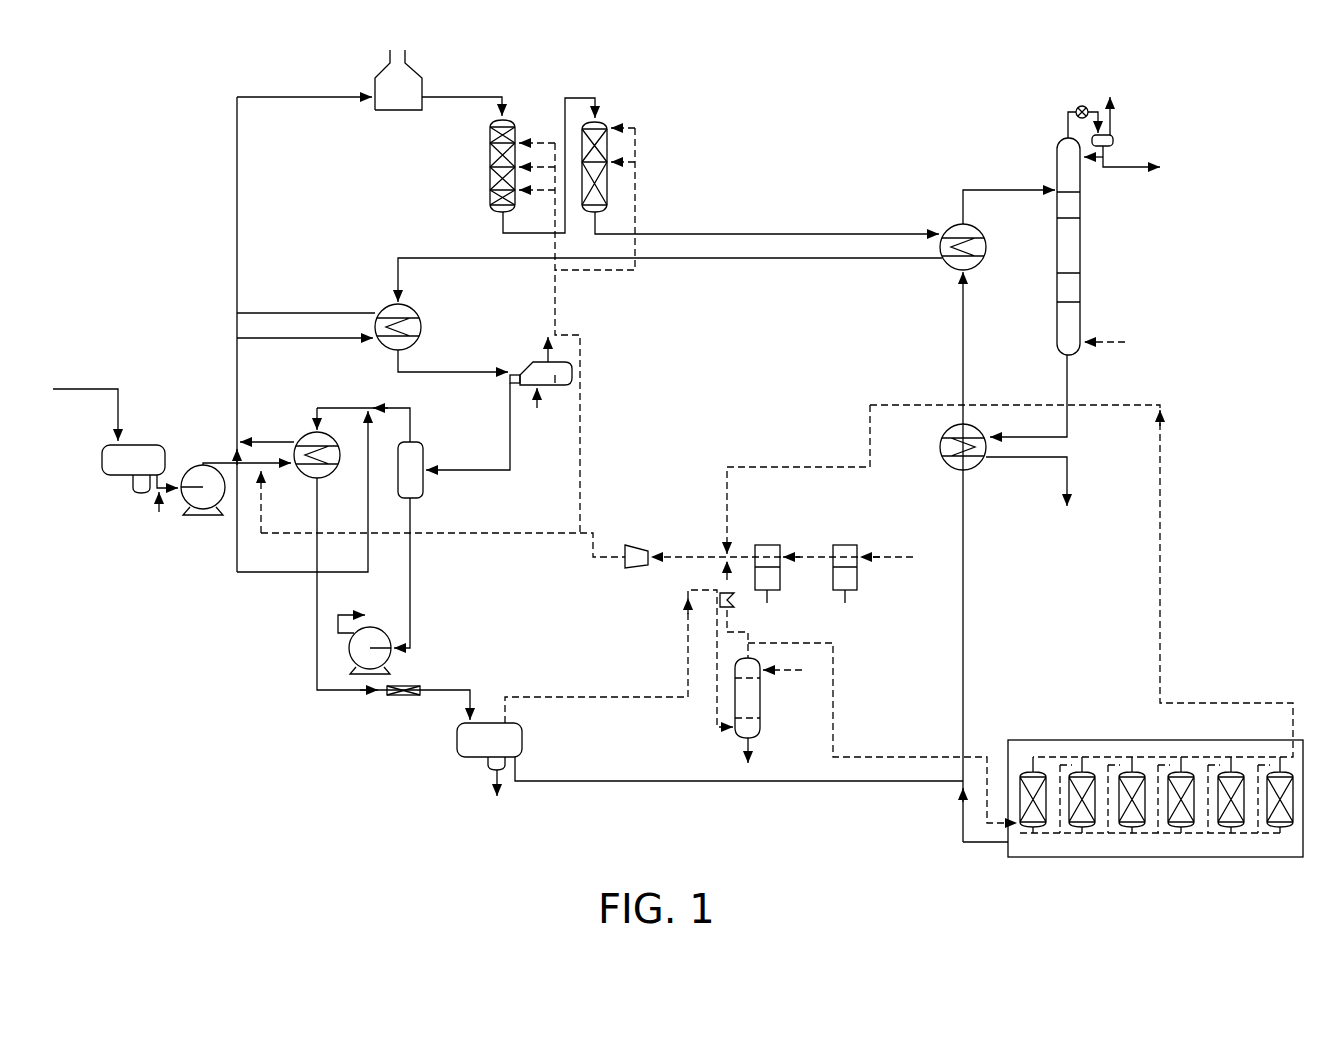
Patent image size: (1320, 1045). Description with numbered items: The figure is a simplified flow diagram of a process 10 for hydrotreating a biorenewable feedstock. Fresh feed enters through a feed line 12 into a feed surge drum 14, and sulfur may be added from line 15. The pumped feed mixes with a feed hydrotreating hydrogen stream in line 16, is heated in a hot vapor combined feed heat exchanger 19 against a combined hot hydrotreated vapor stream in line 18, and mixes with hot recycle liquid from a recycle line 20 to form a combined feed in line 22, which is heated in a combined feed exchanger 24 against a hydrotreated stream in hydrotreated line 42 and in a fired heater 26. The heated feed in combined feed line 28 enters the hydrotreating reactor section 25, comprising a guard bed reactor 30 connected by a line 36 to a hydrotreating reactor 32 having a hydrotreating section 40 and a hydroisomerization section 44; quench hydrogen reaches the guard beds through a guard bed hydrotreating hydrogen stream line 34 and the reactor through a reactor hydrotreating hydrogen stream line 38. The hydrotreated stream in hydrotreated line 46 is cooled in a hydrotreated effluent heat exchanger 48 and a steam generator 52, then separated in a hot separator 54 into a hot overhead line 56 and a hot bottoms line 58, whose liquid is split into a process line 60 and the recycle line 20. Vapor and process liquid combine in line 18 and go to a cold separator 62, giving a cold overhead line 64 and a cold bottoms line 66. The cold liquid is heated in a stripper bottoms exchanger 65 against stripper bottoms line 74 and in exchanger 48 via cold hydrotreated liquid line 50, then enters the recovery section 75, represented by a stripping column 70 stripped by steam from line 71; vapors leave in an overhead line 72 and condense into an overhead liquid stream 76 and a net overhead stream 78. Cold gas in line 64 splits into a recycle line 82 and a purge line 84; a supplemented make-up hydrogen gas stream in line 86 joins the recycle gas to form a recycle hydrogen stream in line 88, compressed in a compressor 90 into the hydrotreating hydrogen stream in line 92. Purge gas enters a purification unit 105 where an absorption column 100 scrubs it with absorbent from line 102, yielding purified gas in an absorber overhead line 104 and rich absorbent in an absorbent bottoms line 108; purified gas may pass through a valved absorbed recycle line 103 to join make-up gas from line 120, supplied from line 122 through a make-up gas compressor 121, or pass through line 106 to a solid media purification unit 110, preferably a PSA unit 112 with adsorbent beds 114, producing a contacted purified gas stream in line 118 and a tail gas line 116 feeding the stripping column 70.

The process 10 is at (103, 224).
The feed line 12 is at (75, 393).
The feed surge drum 14 is at (150, 446).
The line 15 is at (158, 510).
The feed hydrotreating hydrogen stream line 16 is at (453, 532).
The combined hot hydrotreated vapor stream line 18 is at (358, 406).
The hot vapor combined feed heat exchanger 19 is at (312, 480).
The recycle line 20 is at (248, 573).
The combined biorenewable feed line 22 is at (236, 380).
The combined feed exchanger 24 is at (412, 306).
The hydrotreating reactor section 25 is at (666, 118).
The fired heater 26 is at (374, 74).
The combined feed line 28 is at (493, 96).
The guard bed reactor 30 is at (489, 166).
The hydrotreating reactor 32 is at (602, 116).
The guard bed hydrotreating hydrogen stream line 34 is at (556, 268).
The first reactor effluent line 36 is at (520, 233).
The reactor hydrotreating hydrogen stream line 38 is at (636, 232).
The hydrotreating section 40 is at (608, 152).
The hydrotreated line 42 is at (410, 258).
The hydroisomerization section 44 is at (608, 185).
The hydrotreated line 46 is at (780, 233).
The hydrotreated effluent heat exchanger 48 is at (986, 236).
The cold hydrotreated liquid line 50 is at (962, 302).
The steam generator 52 is at (558, 387).
The hot separator 54 is at (420, 442).
The hot overhead line 56 is at (415, 394).
The hot bottoms line 58 is at (413, 594).
The process line 60 is at (370, 545).
The cold separator 62 is at (457, 740).
The cold overhead line 64 is at (580, 696).
The stripper bottoms exchanger 65 is at (947, 430).
The cold bottoms line 66 is at (620, 780).
The stripping column 70 is at (1081, 232).
The line 71 is at (1103, 340).
The overhead line 72 is at (1067, 113).
The stripper bottoms line 74 is at (1068, 378).
The recovery section 75 is at (968, 148).
The overhead liquid stream 76 is at (1130, 168).
The net overhead stream 78 is at (1115, 131).
The recycle line 82 is at (687, 575).
The purge line 84 is at (717, 707).
The supplemented make-up hydrogen gas stream line 86 is at (707, 550).
The recycle hydrogen stream line 88 is at (672, 552).
The compressor 90 is at (636, 568).
The hydrotreating hydrogen stream line 92 is at (592, 547).
The absorption column 100 is at (761, 707).
The absorbent line 102 is at (778, 672).
The absorbed recycle line 103 is at (732, 628).
The absorber overhead line 104 is at (748, 650).
The purification unit 105 is at (1195, 553).
The line 106 is at (833, 643).
The absorbent bottoms line 108 is at (750, 744).
The solid media purification unit 110 is at (961, 860).
The pressure swing adsorption unit 112 is at (1208, 740).
The beds 114 is at (1173, 822).
The tail gas line 116 is at (963, 810).
The contacted purified gas stream line 118 is at (1158, 643).
The make-up gas line 120 is at (735, 550).
The make-up gas compressor 121 is at (832, 558).
The make-up gas line 122 is at (898, 550).